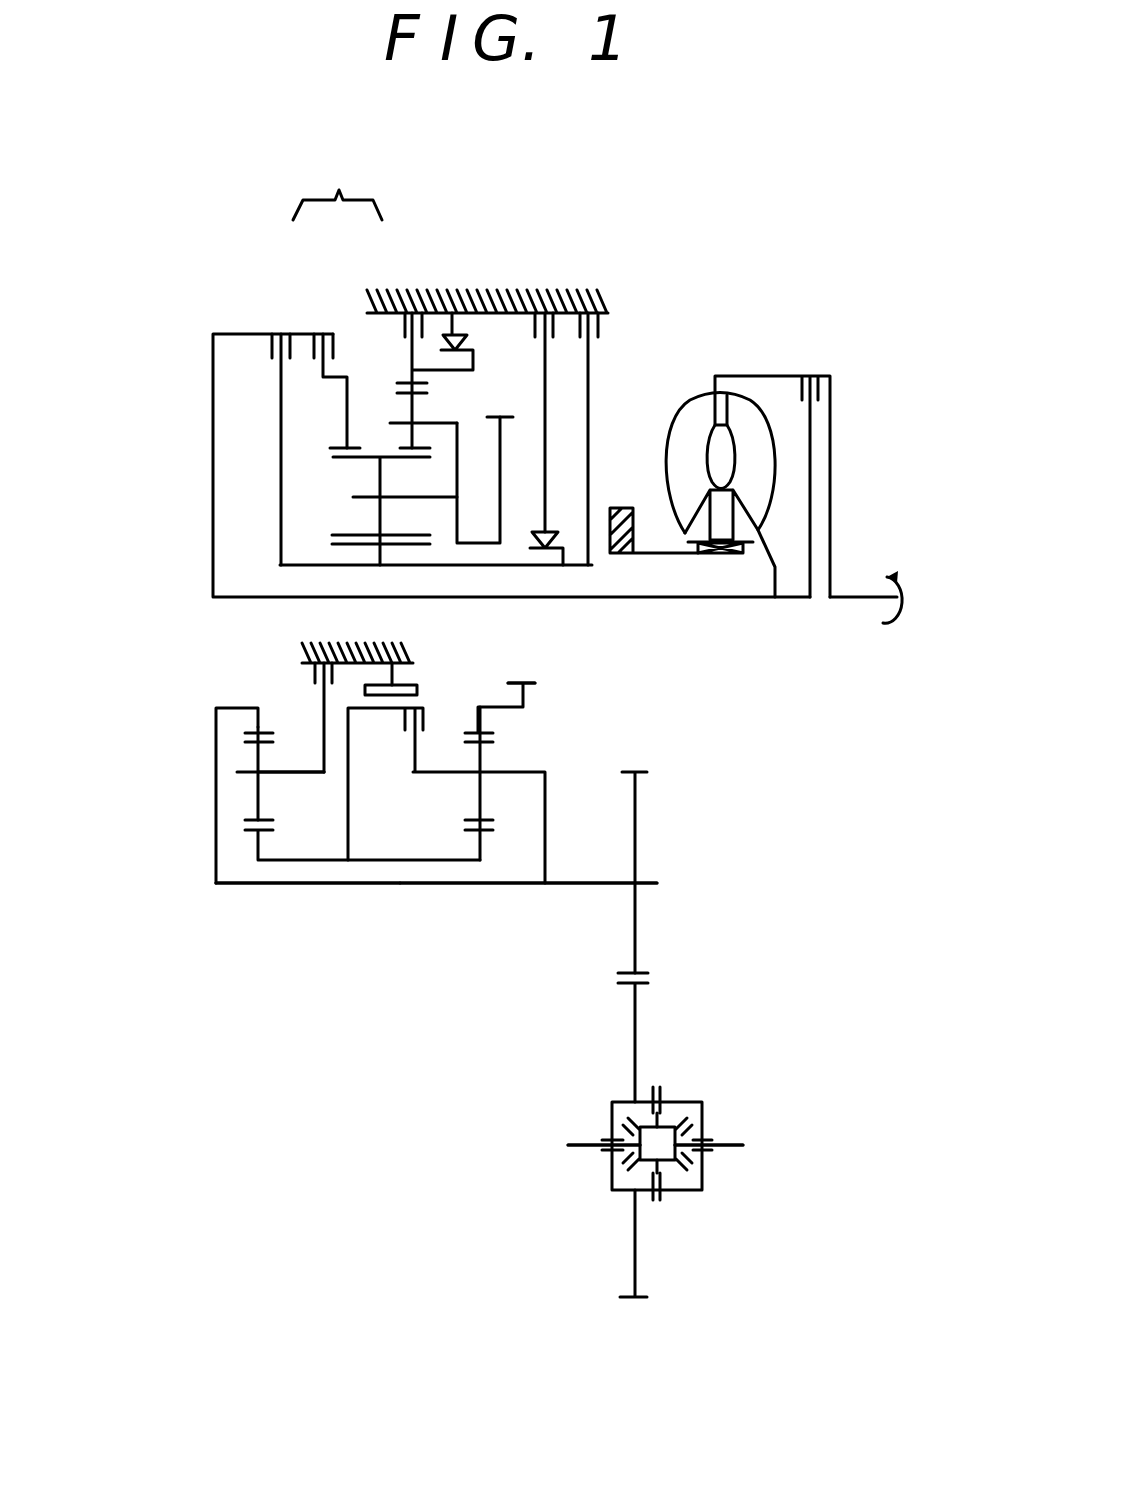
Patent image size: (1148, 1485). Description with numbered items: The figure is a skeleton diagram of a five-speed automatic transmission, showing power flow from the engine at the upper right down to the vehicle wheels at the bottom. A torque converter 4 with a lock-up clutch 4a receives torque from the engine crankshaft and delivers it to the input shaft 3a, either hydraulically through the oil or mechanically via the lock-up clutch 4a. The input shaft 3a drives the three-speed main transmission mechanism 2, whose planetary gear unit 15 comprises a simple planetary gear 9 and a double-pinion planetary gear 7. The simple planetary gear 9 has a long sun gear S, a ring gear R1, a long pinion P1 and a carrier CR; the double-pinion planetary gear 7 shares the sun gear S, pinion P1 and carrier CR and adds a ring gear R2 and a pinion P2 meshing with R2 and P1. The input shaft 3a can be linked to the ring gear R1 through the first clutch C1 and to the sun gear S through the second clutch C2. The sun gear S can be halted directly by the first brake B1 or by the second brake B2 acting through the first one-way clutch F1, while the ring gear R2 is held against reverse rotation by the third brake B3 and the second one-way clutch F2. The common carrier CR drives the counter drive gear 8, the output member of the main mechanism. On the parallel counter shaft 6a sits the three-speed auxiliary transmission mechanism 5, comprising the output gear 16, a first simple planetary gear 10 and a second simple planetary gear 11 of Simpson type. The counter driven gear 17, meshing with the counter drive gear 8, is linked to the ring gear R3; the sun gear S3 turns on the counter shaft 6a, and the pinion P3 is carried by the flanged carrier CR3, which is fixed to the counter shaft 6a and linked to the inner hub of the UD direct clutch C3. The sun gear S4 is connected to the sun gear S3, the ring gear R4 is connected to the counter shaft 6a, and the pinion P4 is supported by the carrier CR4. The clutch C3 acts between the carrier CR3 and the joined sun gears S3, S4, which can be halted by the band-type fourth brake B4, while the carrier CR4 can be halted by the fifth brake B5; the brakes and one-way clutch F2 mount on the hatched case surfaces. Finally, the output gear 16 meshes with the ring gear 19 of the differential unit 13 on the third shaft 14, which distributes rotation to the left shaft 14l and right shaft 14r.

The main transmission mechanism 2 is at (204, 321).
The planetary gear unit 15 is at (337, 188).
The simple planetary gear 9 is at (343, 358).
The double-pinion planetary gear 7 is at (389, 364).
The second clutch C2 is at (279, 429).
The first clutch C1 is at (325, 326).
The ring gear R1 is at (345, 447).
The pinion P1 is at (347, 458).
The sun gear S is at (343, 550).
The carrier CR is at (457, 527).
The counter drive gear 8 is at (500, 413).
The third brake B3 is at (415, 292).
The second one-way clutch F2 is at (444, 308).
The ring gear R2 is at (417, 393).
The pinion P2 is at (413, 433).
The second brake B2 is at (542, 389).
The first brake B1 is at (590, 406).
The first one-way clutch F1 is at (556, 526).
The torque converter 4 is at (684, 389).
The lock-up clutch 4a is at (807, 387).
The input shaft 3a is at (722, 597).
The auxiliary transmission mechanism 5 is at (184, 666).
The second simple planetary gear 11 is at (288, 902).
The first simple planetary gear 10 is at (496, 899).
The fifth brake B5 is at (319, 688).
The fourth brake B4 is at (389, 644).
The UD direct clutch C3 is at (415, 687).
The ring gear R4 is at (250, 727).
The pinion P4 is at (258, 760).
The carrier CR4 is at (290, 773).
The sun gear S4 is at (253, 833).
The ring gear R3 is at (492, 730).
The counter driven gear 17 is at (537, 683).
The carrier CR3 is at (530, 767).
The pinion P3 is at (477, 788).
The sun gear S3 is at (477, 830).
The output gear 16 is at (635, 820).
The counter shaft 6a is at (643, 883).
The ring gear 19 is at (637, 1032).
The differential unit 13 is at (722, 1099).
The left shaft 14l is at (582, 1148).
The right shaft 14r is at (740, 1148).
The third shaft 14 is at (725, 1174).